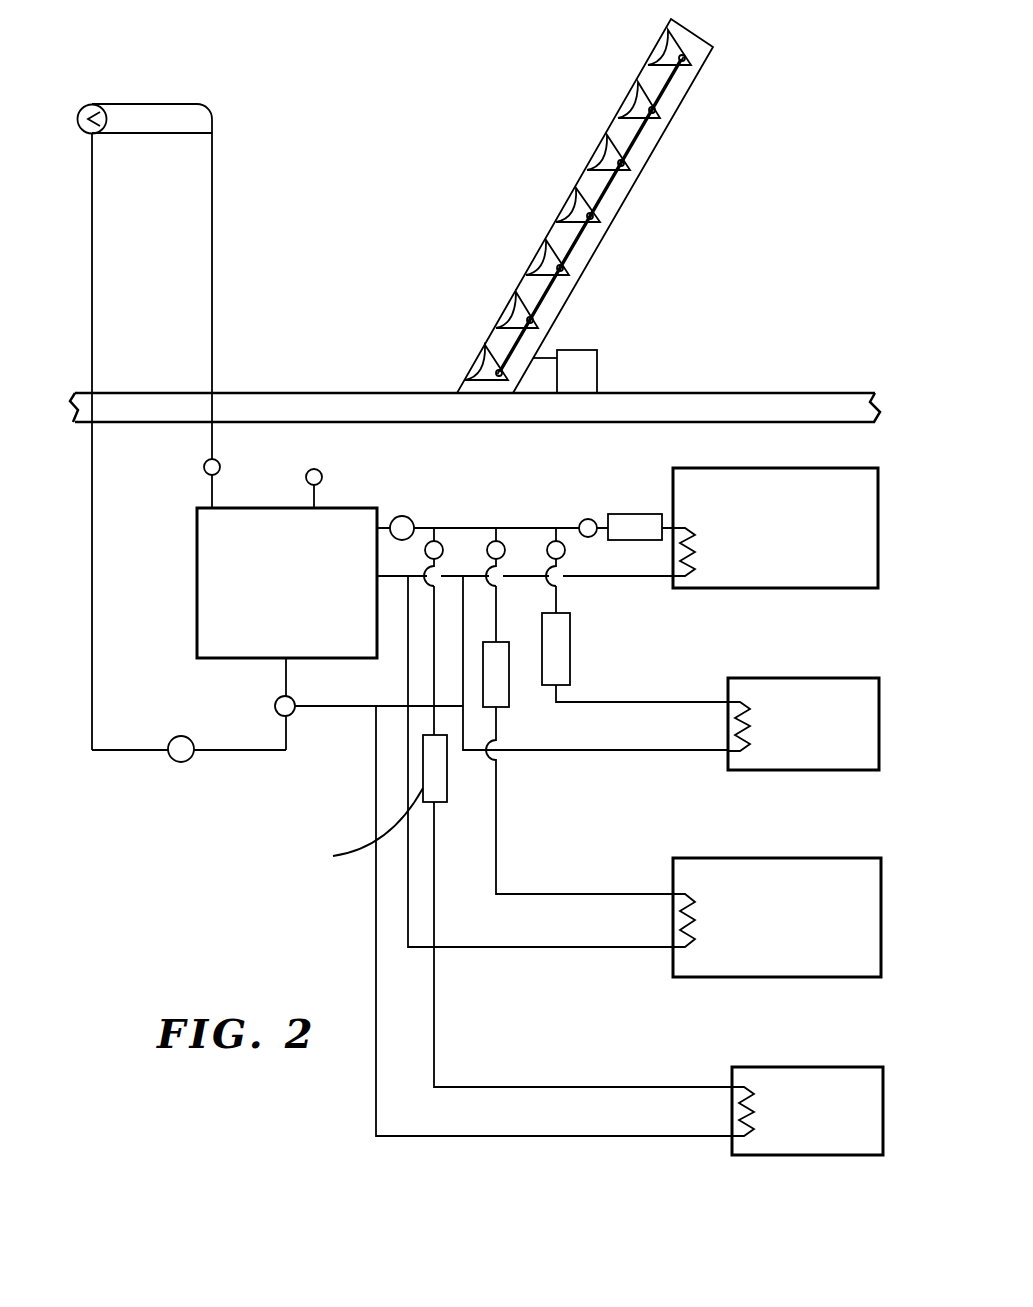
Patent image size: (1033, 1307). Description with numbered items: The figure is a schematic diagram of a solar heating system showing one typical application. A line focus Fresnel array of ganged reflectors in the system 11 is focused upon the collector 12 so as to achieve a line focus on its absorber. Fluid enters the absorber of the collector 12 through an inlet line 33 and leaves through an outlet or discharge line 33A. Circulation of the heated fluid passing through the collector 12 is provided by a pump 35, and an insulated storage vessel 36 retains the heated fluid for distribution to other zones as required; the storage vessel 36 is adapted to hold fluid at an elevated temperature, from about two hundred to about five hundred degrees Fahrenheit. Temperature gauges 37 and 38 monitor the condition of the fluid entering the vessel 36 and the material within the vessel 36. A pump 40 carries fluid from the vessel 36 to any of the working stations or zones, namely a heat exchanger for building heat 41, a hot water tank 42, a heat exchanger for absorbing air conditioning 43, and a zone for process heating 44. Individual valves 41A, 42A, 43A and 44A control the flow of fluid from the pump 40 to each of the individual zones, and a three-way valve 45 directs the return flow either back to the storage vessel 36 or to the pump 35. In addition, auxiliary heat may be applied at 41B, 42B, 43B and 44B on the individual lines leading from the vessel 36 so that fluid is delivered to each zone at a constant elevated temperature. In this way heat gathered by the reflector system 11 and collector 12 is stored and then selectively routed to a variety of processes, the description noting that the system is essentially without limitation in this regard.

The system 11 is at (647, 168).
The collector 12 is at (195, 100).
The inlet line 33 is at (92, 240).
The outlet or discharge line 33A is at (212, 240).
The pump 35 is at (181, 762).
The insulated storage vessel 36 is at (197, 587).
The temperature gauge 37 is at (205, 465).
The temperature gauge 38 is at (320, 471).
The pump 40 is at (402, 516).
The heat exchanger for building heat 41 is at (797, 543).
The valve 41A is at (588, 519).
The auxiliary heat 41B is at (653, 495).
The hot water tank 42 is at (822, 740).
The valve 42A is at (548, 543).
The auxiliary heat 42B is at (557, 646).
The heat exchanger for absorbing air conditioning 43 is at (784, 935).
The valve 43A is at (488, 533).
The auxiliary heat 43B is at (500, 688).
The zone for process heating 44 is at (817, 1125).
The valve 44A is at (468, 511).
The auxiliary heat 44B is at (440, 787).
The three-way valve 45 is at (275, 706).